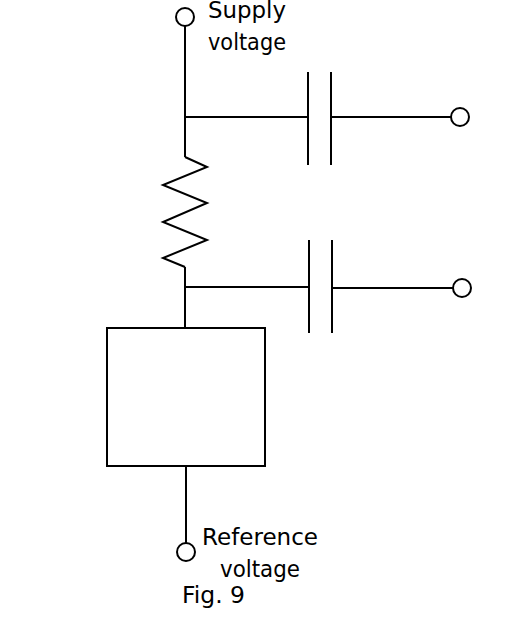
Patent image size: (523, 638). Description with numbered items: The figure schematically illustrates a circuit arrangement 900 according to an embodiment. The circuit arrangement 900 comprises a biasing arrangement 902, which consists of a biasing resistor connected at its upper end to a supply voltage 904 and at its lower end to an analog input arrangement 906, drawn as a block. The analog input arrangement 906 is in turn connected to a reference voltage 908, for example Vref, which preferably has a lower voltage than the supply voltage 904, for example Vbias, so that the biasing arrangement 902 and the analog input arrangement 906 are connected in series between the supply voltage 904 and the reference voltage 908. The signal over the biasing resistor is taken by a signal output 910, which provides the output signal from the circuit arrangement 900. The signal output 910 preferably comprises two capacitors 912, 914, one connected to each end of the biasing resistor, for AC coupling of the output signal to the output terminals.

The circuit arrangement 900 is at (389, 437).
The biasing arrangement 902 is at (188, 209).
The supply voltage 904 is at (176, 14).
The analog input arrangement 906 is at (118, 397).
The reference voltage 908 is at (188, 556).
The signal output 910 is at (481, 228).
The capacitor 912 is at (319, 275).
The capacitor 914 is at (319, 103).